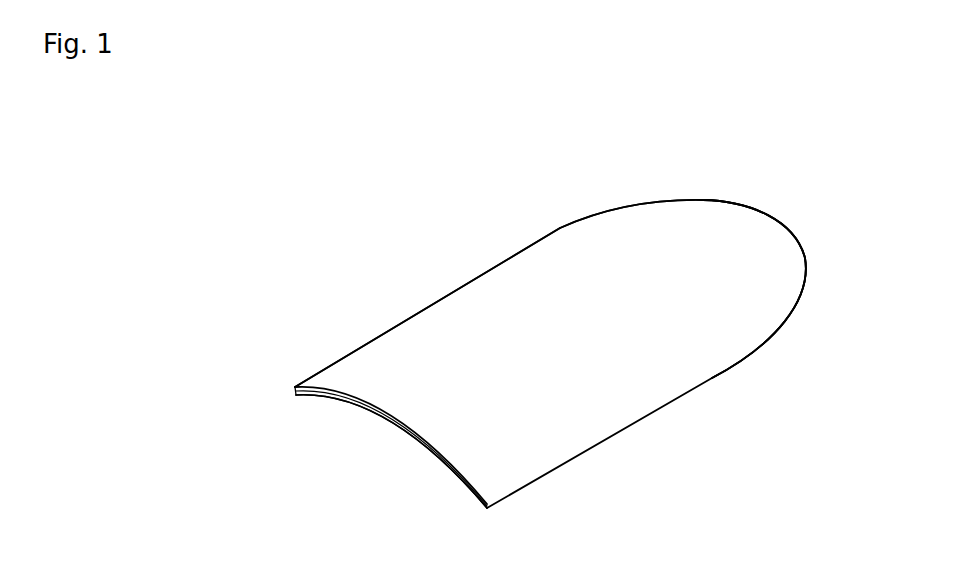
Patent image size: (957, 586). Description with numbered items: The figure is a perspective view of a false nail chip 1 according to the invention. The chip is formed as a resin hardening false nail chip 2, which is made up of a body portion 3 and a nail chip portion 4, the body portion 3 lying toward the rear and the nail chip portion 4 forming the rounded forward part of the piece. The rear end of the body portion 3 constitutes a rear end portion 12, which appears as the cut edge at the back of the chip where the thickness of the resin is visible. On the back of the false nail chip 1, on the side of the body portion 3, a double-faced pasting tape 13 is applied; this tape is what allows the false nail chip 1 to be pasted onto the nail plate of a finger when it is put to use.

The false nail chip 1 is at (633, 481).
The resin hardening false nail chip 2 is at (638, 358).
The body portion 3 is at (482, 327).
The nail chip portion 4 is at (757, 233).
The rear end portion 12 is at (458, 453).
The double-faced pasting tape 13 is at (340, 398).